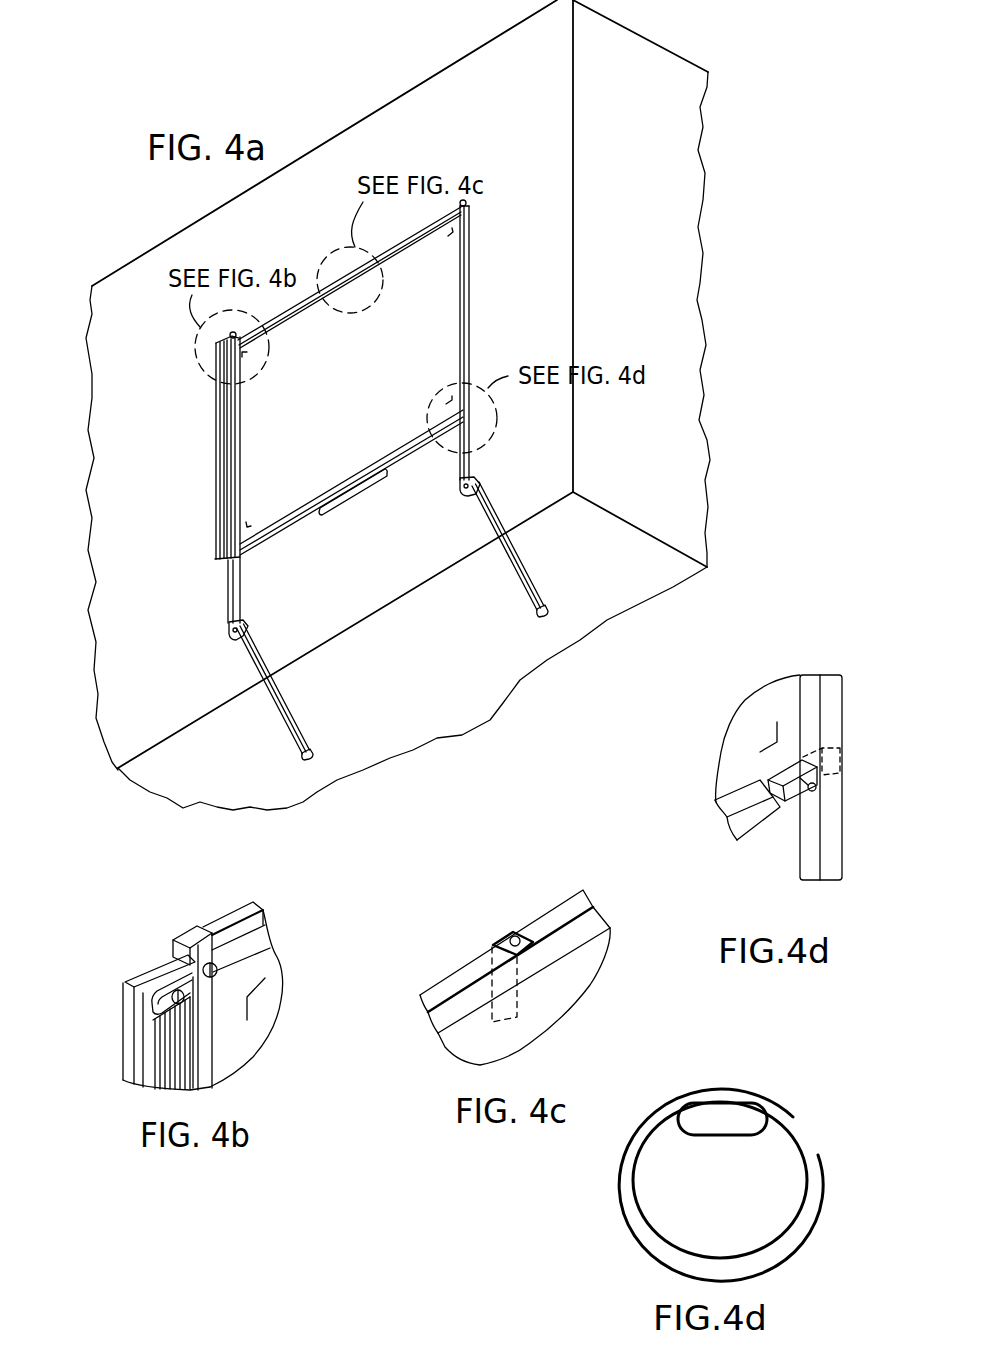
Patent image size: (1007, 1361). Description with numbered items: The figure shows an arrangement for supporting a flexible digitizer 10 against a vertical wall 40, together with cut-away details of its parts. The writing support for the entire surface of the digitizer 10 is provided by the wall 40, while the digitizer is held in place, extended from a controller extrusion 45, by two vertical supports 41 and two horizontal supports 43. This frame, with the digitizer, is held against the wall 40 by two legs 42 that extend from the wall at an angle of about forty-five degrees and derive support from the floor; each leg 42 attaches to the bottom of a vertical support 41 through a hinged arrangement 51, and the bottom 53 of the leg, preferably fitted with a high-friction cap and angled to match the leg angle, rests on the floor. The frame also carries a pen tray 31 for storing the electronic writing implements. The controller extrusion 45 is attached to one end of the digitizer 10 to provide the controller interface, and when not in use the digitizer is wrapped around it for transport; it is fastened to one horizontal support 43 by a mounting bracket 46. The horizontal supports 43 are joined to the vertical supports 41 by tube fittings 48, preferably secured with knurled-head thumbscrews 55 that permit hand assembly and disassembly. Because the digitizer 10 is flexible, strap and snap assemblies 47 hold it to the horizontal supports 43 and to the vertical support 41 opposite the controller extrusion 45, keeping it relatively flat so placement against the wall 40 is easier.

In FIG. 4A, the flexible digitizer 10 is at (452, 260).
In FIG. 4B, the flexible digitizer 10 is at (250, 1032).
In FIG. 4C, the flexible digitizer 10 is at (458, 1042).
In FIG. 4D, the flexible digitizer 10 is at (745, 735).
In FIG. 4E, the flexible digitizer 10 is at (793, 1120).
In FIG. 4A, the pen tray 31 is at (367, 490).
In FIG. 4A, the vertical wall 40 is at (120, 727).
In FIG. 4A, the vertical supports 41 is at (473, 287).
In FIG. 4D, the vertical supports 41 is at (812, 680).
In FIG. 4A, the legs 42 is at (287, 697).
In FIG. 4A, the horizontal supports 43 is at (290, 527).
In FIG. 4B, the horizontal supports 43 is at (230, 922).
In FIG. 4C, the horizontal supports 43 is at (560, 913).
In FIG. 4D, the horizontal supports 43 is at (793, 800).
In FIG. 4A, the controller extrusion 45 is at (215, 497).
In FIG. 4B, the controller extrusion 45 is at (130, 1033).
In FIG. 4E, the controller extrusion 45 is at (718, 1113).
In FIG. 4B, the mounting bracket 46 is at (185, 980).
In FIG. 4C, the strap and snap assembly 47 is at (502, 938).
In FIG. 4D, the tube fittings 48 is at (730, 803).
In FIG. 4A, the hinged arrangement 51 is at (229, 635).
In FIG. 4A, the bottom of the leg 53 is at (313, 750).
In FIG. 4B, the thumbscrews 55 is at (218, 973).